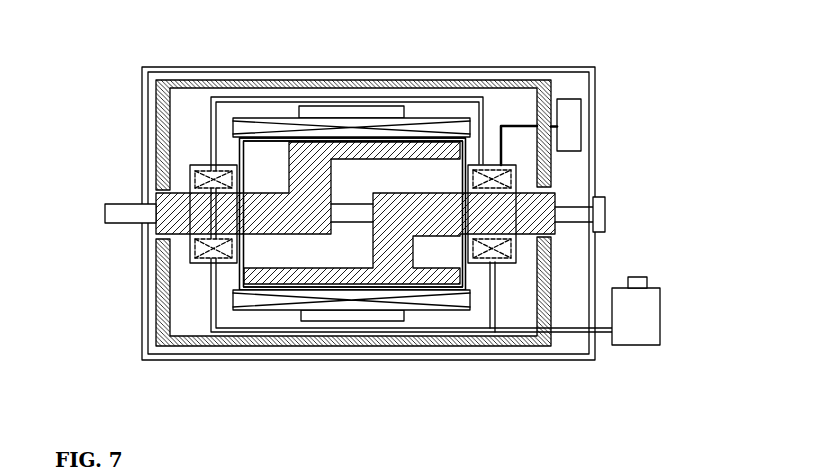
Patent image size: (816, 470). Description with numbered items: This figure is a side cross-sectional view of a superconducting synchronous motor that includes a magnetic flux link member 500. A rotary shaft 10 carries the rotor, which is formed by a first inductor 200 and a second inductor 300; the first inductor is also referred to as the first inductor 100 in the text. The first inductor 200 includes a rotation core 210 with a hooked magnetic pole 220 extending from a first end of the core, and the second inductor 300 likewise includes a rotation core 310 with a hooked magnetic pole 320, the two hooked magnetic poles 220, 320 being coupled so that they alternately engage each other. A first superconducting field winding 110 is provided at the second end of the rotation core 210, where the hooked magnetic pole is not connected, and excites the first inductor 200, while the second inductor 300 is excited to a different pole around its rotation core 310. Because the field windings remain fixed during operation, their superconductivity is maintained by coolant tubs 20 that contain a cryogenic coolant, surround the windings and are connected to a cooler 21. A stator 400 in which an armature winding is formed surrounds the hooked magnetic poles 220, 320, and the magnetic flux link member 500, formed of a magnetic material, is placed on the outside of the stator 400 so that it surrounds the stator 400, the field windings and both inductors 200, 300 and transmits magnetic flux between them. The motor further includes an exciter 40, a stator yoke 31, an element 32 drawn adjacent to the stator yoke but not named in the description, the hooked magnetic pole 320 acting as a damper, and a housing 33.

The rotary shaft 10 is at (106, 209).
The coolant tub 20 is at (372, 214).
The cooler 21 is at (637, 277).
The stator yoke 31 is at (347, 110).
The bobbin 32 is at (243, 152).
The housing 33 is at (184, 67).
The exciter 40 is at (568, 103).
The first inductor 100 is at (205, 263).
The first superconducting field winding 110 is at (508, 183).
The first inductor 200 is at (355, 284).
The rotation core 210 is at (528, 228).
The hooked magnetic pole 220 is at (425, 278).
The second inductor 300 is at (336, 184).
The rotation core 310 is at (156, 185).
The hooked magnetic pole 320 is at (243, 156).
The stator 400 is at (433, 121).
The magnetic flux link member 500 is at (529, 83).